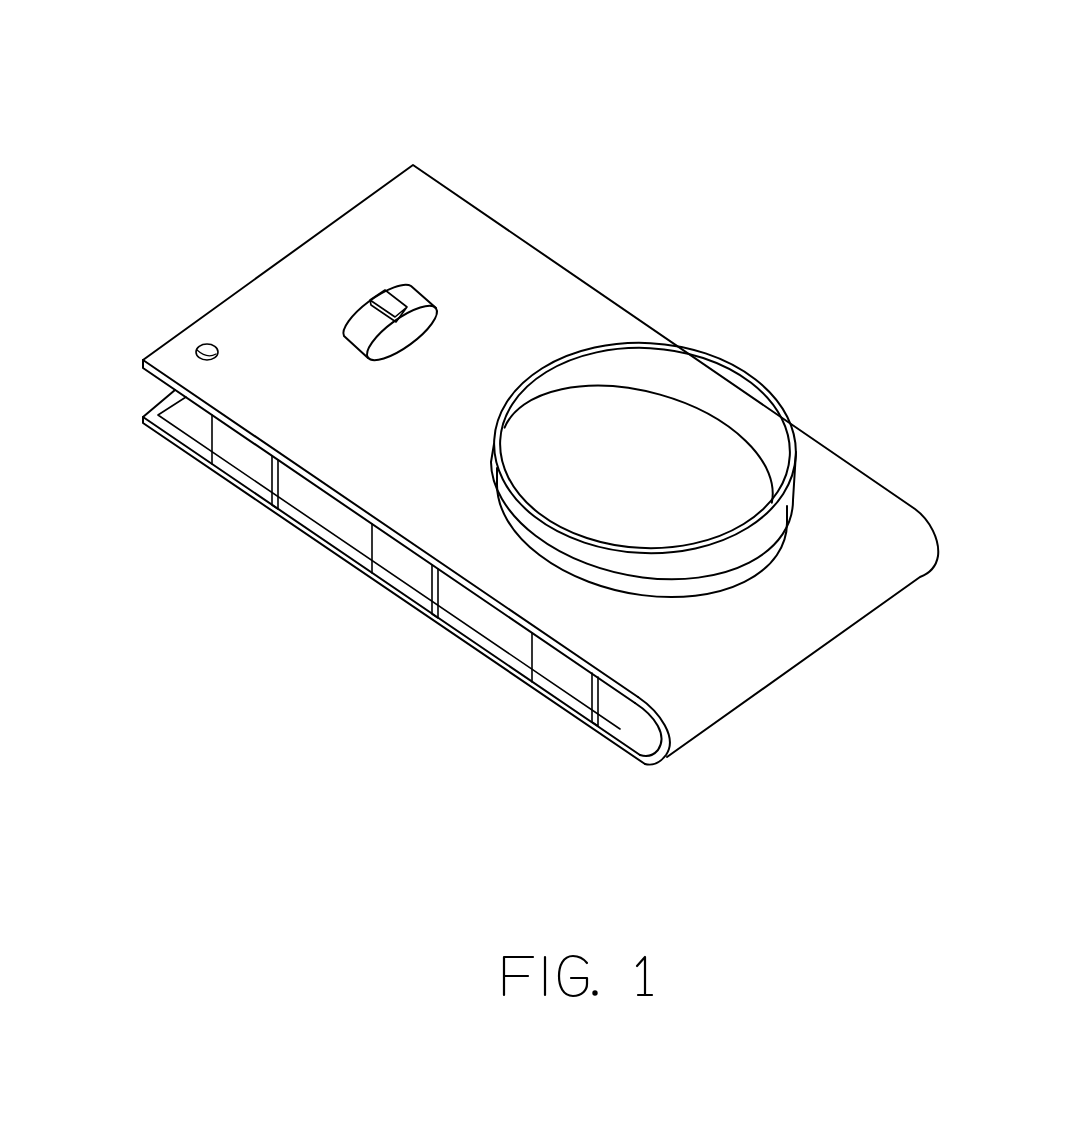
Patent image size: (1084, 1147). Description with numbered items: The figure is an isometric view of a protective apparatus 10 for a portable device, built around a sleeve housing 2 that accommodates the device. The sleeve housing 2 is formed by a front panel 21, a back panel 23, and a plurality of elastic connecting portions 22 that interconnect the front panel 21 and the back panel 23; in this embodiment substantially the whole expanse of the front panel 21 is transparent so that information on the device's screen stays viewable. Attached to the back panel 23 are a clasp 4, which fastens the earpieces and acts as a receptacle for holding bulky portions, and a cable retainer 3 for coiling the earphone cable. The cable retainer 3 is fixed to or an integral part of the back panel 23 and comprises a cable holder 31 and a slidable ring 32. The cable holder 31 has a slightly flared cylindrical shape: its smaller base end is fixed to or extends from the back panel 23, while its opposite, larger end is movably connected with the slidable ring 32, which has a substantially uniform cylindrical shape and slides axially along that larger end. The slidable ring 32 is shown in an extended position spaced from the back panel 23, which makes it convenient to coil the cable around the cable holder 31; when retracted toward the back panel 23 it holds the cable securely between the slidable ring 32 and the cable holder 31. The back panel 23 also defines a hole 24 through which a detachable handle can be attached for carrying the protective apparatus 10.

The protective apparatus 10 is at (599, 38).
The sleeve housing 2 is at (608, 285).
The cable retainer 3 is at (375, 678).
The clasp 4 is at (412, 293).
The front panel 21 is at (183, 437).
The elastic connecting portions 22 is at (407, 570).
The back panel 23 is at (625, 697).
The hole 24 is at (200, 342).
The cable holder 31 is at (597, 575).
The slidable ring 32 is at (555, 527).